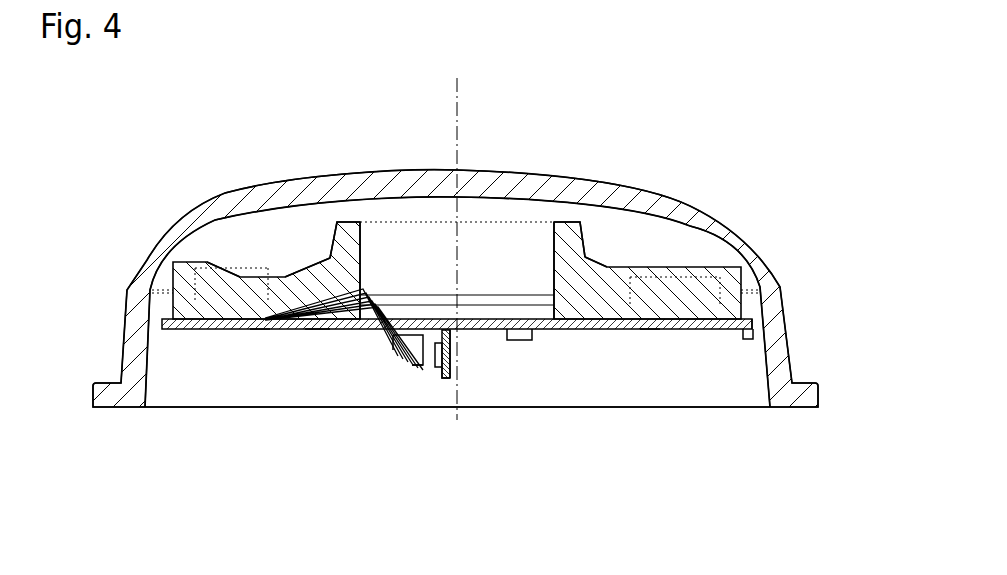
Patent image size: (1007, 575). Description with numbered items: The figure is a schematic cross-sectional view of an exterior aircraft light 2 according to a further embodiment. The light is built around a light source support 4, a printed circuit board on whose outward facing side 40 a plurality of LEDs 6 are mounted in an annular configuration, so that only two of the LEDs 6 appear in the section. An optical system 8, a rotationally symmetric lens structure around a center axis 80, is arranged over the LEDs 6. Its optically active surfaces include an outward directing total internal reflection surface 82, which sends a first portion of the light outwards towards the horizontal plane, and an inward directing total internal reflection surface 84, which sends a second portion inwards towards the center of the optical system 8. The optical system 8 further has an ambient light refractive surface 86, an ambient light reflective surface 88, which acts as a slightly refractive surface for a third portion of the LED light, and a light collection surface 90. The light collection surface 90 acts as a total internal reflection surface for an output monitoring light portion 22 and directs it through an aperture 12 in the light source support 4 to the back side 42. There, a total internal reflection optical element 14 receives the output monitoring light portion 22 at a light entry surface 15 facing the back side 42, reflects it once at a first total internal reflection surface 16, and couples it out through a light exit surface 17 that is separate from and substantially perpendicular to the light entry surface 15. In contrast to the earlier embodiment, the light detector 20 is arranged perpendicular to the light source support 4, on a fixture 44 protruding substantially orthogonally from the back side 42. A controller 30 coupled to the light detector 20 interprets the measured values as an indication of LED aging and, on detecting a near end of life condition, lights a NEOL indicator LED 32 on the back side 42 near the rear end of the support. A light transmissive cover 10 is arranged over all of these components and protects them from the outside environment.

The exterior aircraft light 2 is at (705, 136).
The light source support 4 is at (615, 330).
The LEDs 6 is at (260, 330).
The optical system 8 is at (275, 275).
The light transmissive cover 10 is at (752, 238).
The aperture 12 is at (375, 331).
The total internal reflection optical element 14 is at (403, 372).
The light entry surface 15 is at (420, 295).
The first total internal reflection surface 16 is at (390, 351).
The light exit surface 17 is at (435, 356).
The light detector 20 is at (443, 370).
The output monitoring light portion 22 is at (320, 330).
The controller 30 is at (518, 341).
The NEOL indicator LED 32 is at (755, 334).
The outward facing side 40 is at (728, 312).
The back side 42 is at (730, 342).
The fixture 44 is at (458, 358).
The center axis 80 is at (455, 84).
The outward directing total internal reflection surface 82 is at (190, 290).
The inward directing total internal reflection surface 84 is at (307, 262).
The ambient light refractive surface 86 is at (322, 258).
The ambient light reflective surface 88 is at (338, 300).
The light collection surface 90 is at (364, 291).